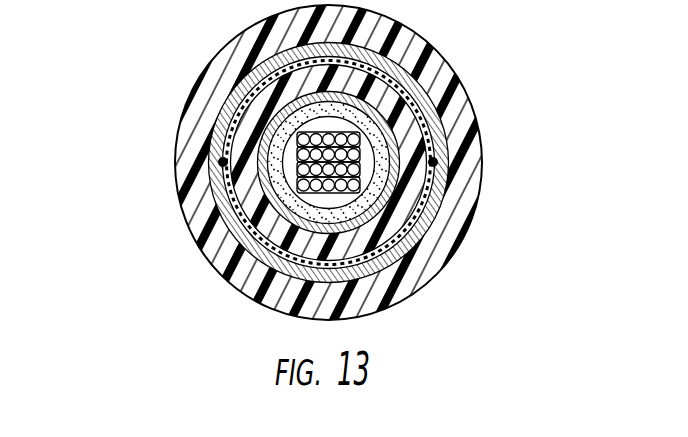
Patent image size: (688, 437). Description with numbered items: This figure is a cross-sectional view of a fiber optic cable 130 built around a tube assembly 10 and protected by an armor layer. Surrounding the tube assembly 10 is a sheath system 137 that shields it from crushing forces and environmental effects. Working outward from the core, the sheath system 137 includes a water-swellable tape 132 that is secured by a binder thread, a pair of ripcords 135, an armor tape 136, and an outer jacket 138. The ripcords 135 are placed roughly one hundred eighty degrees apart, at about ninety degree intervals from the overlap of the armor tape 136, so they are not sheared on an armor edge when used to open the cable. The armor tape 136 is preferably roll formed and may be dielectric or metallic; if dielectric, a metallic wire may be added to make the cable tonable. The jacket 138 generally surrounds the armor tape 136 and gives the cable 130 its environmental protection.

The cable 130 is at (324, 162).
The tube assembly 10 is at (403, 144).
The water-swellable tape 132 is at (440, 205).
The ripcords 135 is at (438, 162).
The armor tape 136 is at (207, 245).
The sheath system 137 is at (212, 155).
The jacket 138 is at (443, 240).